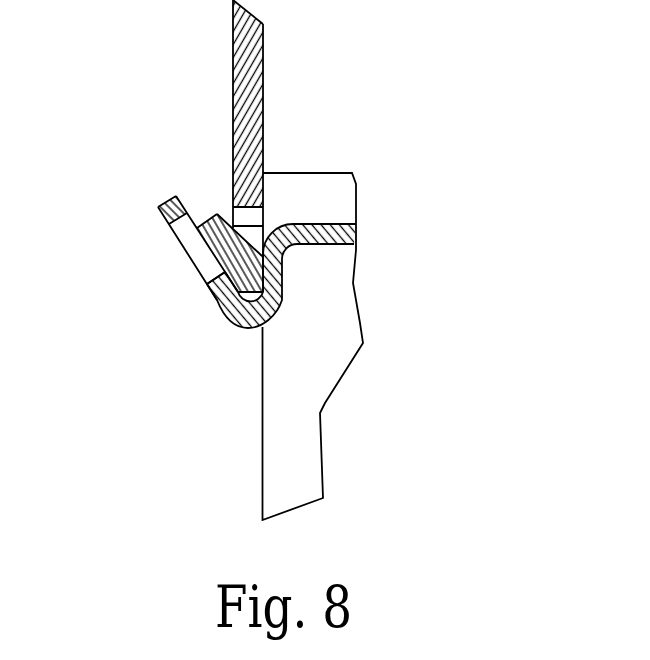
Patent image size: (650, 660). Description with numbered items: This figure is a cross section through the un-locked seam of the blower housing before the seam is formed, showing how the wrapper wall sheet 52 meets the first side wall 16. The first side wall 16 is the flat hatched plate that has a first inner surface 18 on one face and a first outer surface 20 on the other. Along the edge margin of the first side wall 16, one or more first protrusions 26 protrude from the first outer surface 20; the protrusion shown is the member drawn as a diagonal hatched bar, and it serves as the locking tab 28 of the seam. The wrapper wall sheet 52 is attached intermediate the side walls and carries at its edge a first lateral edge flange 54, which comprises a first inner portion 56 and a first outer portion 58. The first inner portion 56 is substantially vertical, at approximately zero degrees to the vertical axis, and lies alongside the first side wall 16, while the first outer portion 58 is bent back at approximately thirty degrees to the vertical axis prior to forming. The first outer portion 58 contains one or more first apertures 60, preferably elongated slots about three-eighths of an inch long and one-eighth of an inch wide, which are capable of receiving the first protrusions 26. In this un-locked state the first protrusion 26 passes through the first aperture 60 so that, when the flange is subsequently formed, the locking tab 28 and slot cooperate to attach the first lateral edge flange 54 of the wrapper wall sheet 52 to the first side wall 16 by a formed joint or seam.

The first side wall 16 is at (233, 84).
The first outer surface 20 is at (339, 146).
The first inner surface 18 is at (263, 88).
The first protrusions 26 is at (218, 214).
The locking tab 28 is at (183, 248).
The wrapper wall sheet 52 is at (340, 234).
The first lateral edge flange 54 is at (237, 329).
The first inner portion 56 is at (283, 260).
The first outer portion 58 is at (220, 310).
The first apertures 60 is at (192, 253).